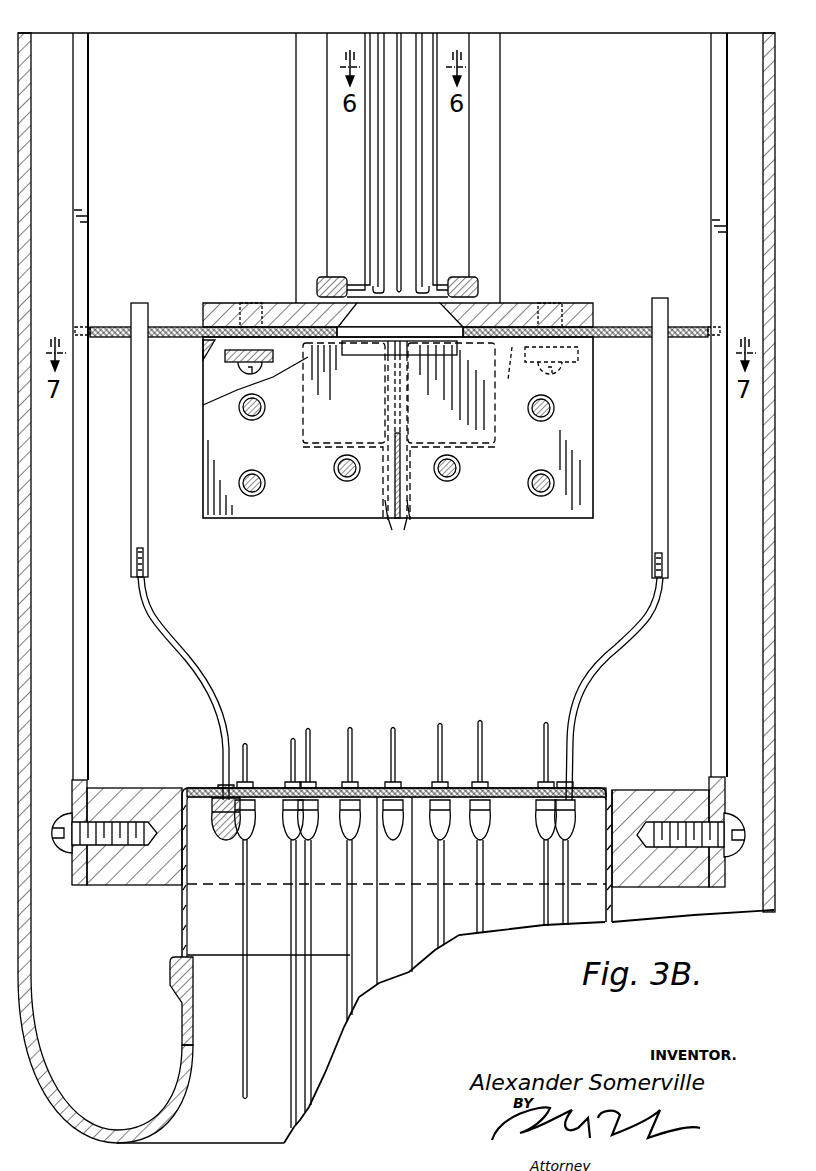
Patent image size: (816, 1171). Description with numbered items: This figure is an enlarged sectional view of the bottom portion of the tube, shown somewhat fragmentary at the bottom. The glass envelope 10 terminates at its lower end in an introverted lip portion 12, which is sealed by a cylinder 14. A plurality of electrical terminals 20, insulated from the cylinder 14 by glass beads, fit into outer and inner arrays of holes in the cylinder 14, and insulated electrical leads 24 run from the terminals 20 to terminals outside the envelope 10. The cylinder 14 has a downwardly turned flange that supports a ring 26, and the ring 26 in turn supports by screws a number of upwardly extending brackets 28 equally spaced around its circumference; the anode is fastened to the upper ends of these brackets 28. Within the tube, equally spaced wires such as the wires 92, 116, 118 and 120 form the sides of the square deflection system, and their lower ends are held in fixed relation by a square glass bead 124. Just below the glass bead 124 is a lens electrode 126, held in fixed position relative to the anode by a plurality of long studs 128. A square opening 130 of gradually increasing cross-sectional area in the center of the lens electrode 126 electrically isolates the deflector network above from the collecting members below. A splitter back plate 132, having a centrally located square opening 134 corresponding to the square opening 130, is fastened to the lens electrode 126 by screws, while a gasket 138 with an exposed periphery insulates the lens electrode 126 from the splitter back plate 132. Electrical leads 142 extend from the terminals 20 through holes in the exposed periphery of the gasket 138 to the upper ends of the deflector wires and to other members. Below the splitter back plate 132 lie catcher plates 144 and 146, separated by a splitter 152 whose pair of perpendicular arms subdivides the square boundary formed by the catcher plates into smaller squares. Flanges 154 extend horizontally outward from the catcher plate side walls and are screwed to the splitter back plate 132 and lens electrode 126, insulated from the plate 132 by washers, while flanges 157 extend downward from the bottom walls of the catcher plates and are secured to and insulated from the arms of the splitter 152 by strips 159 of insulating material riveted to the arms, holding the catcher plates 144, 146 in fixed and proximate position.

The glass envelope 10 is at (70, 1108).
The introverted lip portion 12 is at (186, 1031).
The cylinder 14 is at (182, 923).
The electrical terminals 20 is at (300, 748).
The insulated electrical leads 24 is at (563, 870).
The ring 26 is at (112, 886).
The brackets 28 is at (86, 636).
The wire 92 is at (440, 42).
The wire 116 is at (365, 34).
The wire 118 is at (381, 33).
The wire 120 is at (400, 33).
The square glass bead 124 is at (480, 285).
The lens electrode 126 is at (229, 303).
The long studs 128 is at (296, 84).
The square opening 130 is at (352, 305).
The splitter back plate 132 is at (593, 336).
The square opening 134 is at (483, 346).
The gasket 138 is at (175, 327).
The electrical leads 142 is at (140, 303).
The catcher plate 144 is at (476, 448).
The catcher plate 146 is at (313, 449).
The splitter 152 is at (210, 421).
The flanges 154 is at (210, 357).
The flanges 157 is at (383, 496).
The strips 159 is at (389, 520).